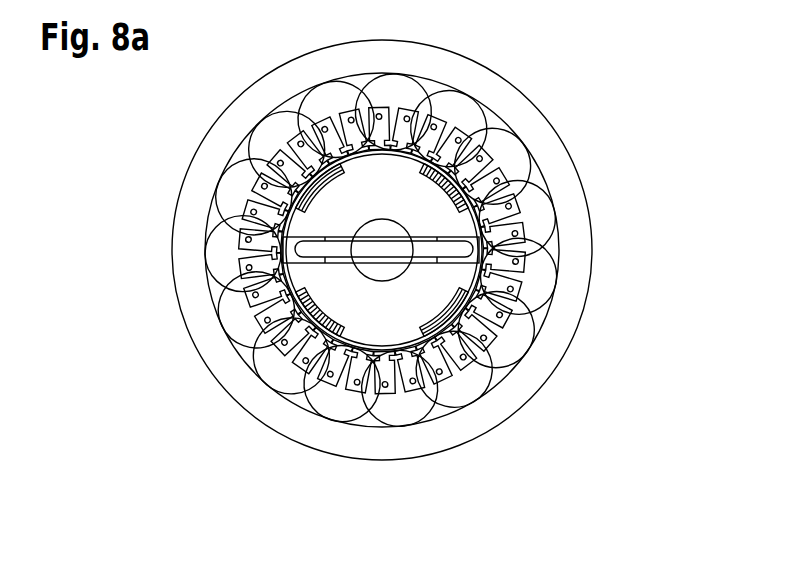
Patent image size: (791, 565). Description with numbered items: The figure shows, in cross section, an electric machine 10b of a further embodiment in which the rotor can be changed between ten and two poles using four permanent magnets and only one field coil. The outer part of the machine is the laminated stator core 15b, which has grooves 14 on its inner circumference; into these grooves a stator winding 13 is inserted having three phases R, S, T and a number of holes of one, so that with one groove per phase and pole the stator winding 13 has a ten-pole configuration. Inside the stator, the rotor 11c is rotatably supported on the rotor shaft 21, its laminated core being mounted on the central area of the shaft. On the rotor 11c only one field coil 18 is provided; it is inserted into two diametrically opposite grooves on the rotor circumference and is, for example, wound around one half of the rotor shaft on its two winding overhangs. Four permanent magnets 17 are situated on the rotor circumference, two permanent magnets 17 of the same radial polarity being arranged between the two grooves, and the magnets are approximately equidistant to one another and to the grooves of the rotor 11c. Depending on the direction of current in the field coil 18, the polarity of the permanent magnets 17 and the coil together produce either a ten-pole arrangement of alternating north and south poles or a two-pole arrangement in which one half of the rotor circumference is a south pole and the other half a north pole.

The machine 10b is at (220, 114).
The laminated stator core 15b is at (207, 168).
The rotor 11c is at (305, 227).
The field coil 18 is at (304, 254).
The permanent magnets 17 is at (345, 348).
The rotor shaft 21 is at (383, 270).
The grooves 14 is at (384, 392).
The stator winding 13 is at (553, 298).
The phase winding R is at (520, 160).
The phase winding S is at (553, 217).
The phase winding T is at (555, 268).